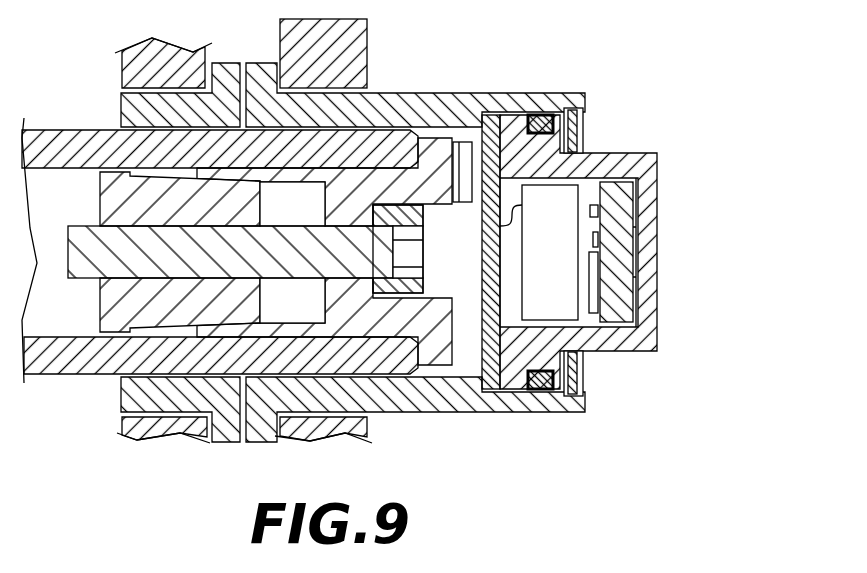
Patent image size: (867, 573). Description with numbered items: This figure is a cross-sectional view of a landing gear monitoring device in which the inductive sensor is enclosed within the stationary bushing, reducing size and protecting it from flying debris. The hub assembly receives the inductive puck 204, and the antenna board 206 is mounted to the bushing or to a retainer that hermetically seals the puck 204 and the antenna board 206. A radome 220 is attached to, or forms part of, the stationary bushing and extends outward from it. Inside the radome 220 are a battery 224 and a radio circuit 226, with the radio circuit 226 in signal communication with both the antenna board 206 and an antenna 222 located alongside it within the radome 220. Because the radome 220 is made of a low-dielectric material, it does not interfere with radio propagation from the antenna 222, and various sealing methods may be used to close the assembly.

The inductive puck 204 is at (463, 143).
The antenna board 206 is at (493, 115).
The radome 220 is at (650, 193).
The antenna 222 is at (637, 255).
The battery 224 is at (565, 266).
The radio circuit 226 is at (593, 205).